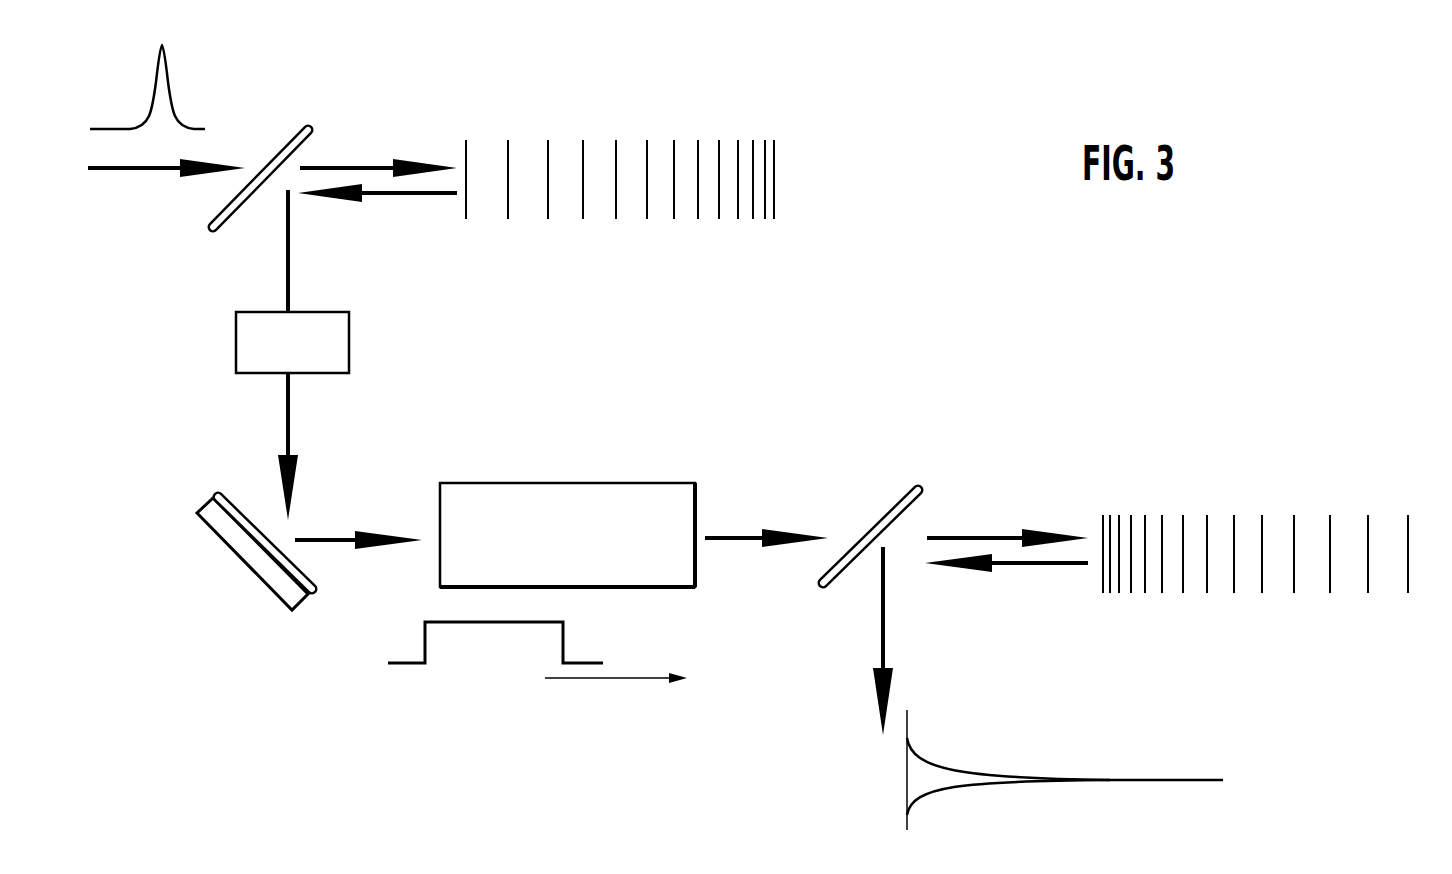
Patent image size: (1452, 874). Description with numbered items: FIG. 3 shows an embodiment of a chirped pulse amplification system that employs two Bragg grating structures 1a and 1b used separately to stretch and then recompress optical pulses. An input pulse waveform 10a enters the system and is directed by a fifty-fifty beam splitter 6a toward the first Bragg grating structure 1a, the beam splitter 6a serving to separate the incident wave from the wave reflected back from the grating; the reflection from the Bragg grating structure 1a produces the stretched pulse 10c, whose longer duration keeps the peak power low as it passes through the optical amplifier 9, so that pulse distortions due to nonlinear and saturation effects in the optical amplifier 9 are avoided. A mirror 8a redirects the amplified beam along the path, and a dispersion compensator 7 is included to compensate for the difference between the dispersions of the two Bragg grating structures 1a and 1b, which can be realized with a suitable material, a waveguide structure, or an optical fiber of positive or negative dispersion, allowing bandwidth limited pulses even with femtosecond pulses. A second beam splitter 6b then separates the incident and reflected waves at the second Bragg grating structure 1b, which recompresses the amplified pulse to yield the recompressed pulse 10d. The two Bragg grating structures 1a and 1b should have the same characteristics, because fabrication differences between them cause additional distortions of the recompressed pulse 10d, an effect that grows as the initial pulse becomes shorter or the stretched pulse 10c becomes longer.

The input pulse waveform 10a is at (168, 80).
The beam splitter 6a is at (315, 122).
The Bragg grating structure 1a is at (618, 130).
The dispersion compensator 7 is at (337, 343).
The mirror 8a is at (218, 527).
The optical amplifier 9 is at (627, 490).
The beam splitter 6b is at (923, 482).
The Bragg grating structure 1b is at (1152, 500).
The stretched pulse 10c is at (470, 650).
The recompressed pulse 10d is at (1095, 783).